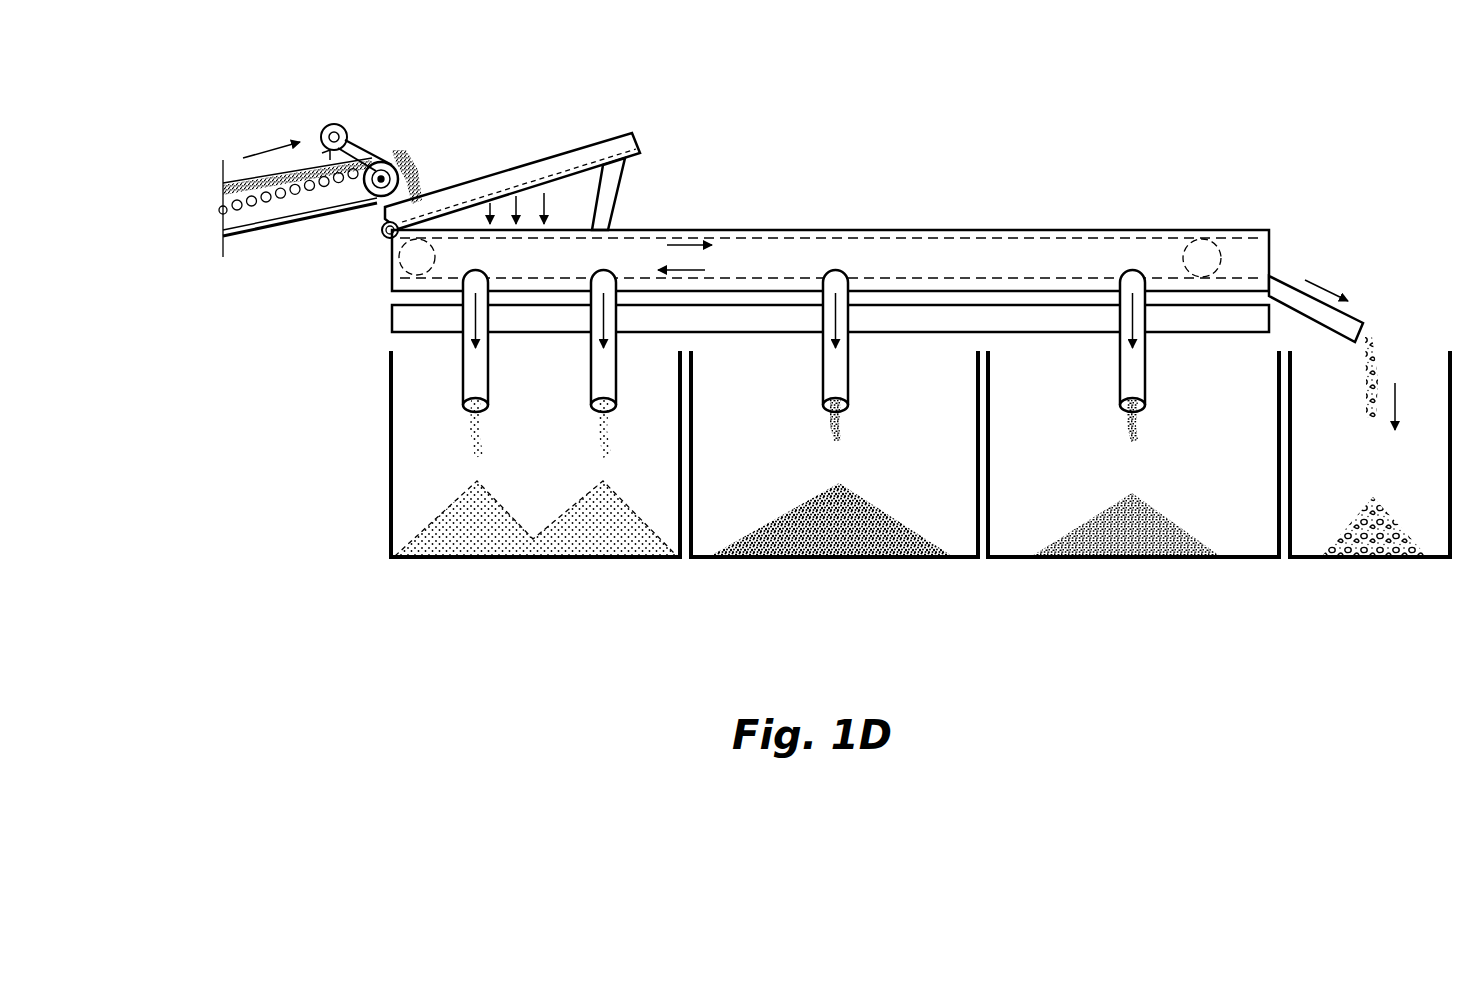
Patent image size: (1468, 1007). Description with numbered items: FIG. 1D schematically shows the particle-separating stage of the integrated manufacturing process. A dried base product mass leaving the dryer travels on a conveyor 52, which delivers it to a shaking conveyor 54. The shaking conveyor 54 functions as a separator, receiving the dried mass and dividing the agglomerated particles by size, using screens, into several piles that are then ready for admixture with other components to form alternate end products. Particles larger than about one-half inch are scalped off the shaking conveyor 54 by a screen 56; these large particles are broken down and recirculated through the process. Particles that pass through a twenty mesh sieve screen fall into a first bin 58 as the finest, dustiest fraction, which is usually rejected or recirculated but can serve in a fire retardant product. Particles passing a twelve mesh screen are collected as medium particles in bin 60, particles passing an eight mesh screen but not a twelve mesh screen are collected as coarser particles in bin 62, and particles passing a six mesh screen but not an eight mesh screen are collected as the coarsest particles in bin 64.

The conveyor 52 is at (283, 186).
The shaking conveyor 54 is at (1028, 230).
The screen 56 is at (592, 137).
The first bin 58 is at (429, 495).
The bin 60 is at (762, 483).
The bin 62 is at (1068, 493).
The bin 64 is at (1338, 487).